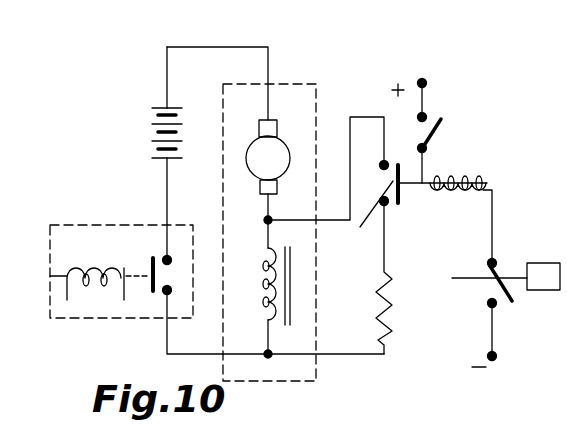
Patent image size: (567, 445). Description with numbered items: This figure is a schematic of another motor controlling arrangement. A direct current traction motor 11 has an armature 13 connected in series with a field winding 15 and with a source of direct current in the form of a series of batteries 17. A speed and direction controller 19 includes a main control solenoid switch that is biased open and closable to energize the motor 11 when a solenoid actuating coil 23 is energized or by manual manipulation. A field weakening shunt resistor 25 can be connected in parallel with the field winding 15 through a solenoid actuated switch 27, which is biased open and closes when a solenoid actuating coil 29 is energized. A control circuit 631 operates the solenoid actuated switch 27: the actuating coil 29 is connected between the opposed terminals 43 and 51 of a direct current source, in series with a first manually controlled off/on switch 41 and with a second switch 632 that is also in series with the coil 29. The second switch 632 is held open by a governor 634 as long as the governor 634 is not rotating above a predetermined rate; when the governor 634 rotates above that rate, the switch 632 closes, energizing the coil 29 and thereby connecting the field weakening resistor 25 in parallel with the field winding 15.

The direct current traction motor 11 is at (309, 68).
The armature 13 is at (255, 171).
The field winding 15 is at (265, 294).
The batteries 17 is at (158, 134).
The speed and direction controller 19 is at (85, 320).
The solenoid actuating coil 23 is at (95, 268).
The field weakening shunt resistor 25 is at (378, 291).
The solenoid actuated switch 27 is at (367, 211).
The solenoid actuating coil 29 is at (457, 192).
The first manually controlled off/on switch 41 is at (437, 131).
The terminal 43 is at (427, 83).
The terminal 51 is at (488, 356).
The control circuit 631 is at (484, 292).
The second switch 632 is at (452, 278).
The governor 634 is at (540, 262).